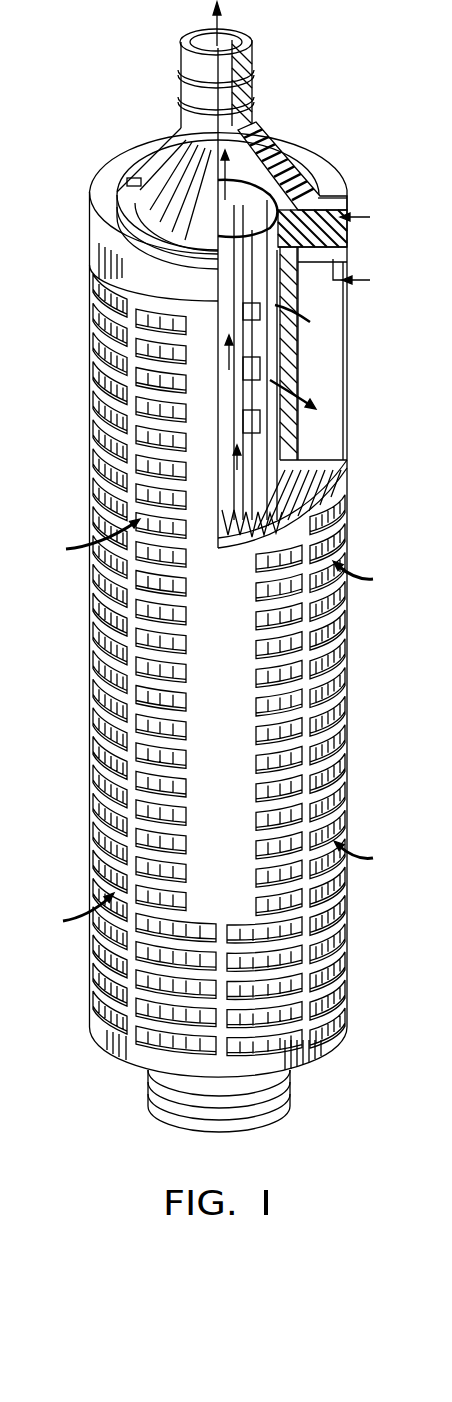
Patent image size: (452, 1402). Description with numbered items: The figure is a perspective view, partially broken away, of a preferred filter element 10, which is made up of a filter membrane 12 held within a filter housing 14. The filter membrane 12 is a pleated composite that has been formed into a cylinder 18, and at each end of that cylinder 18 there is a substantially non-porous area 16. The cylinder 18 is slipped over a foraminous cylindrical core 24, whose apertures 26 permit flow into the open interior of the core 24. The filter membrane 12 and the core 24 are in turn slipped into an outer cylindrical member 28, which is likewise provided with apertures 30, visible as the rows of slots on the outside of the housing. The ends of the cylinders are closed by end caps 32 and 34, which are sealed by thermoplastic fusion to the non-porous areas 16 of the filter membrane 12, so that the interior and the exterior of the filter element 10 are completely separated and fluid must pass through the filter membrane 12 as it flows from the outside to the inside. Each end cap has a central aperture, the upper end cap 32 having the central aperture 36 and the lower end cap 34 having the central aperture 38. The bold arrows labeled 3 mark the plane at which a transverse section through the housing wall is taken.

The filter element 10 is at (330, 152).
The filter membrane 12 is at (330, 356).
The filter housing 14 is at (238, 665).
The substantially non-porous area 16 is at (225, 203).
The cylinder 18 is at (338, 458).
The foraminous cylindrical core 24 is at (297, 322).
The apertures 26 is at (265, 368).
The outer cylindrical member 28 is at (338, 706).
The apertures 30 is at (341, 600).
The end cap 32 is at (336, 187).
The end cap 34 is at (333, 1040).
The central aperture 36 is at (267, 192).
The central aperture 38 is at (188, 1120).
The section line 3- 3 is at (363, 249).